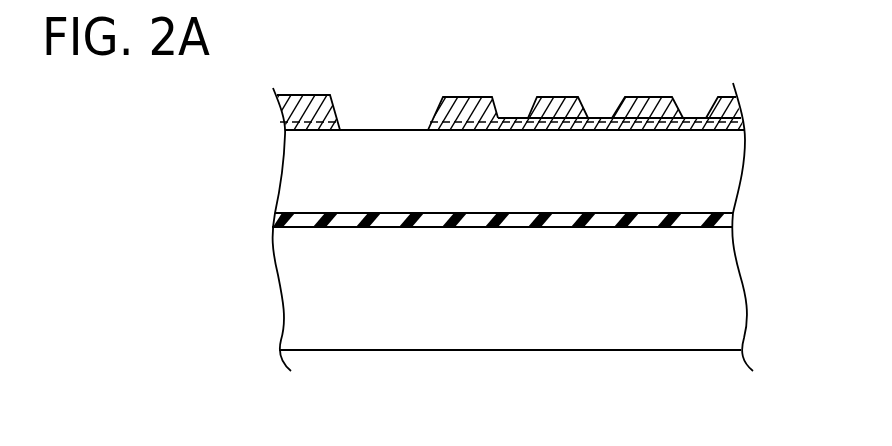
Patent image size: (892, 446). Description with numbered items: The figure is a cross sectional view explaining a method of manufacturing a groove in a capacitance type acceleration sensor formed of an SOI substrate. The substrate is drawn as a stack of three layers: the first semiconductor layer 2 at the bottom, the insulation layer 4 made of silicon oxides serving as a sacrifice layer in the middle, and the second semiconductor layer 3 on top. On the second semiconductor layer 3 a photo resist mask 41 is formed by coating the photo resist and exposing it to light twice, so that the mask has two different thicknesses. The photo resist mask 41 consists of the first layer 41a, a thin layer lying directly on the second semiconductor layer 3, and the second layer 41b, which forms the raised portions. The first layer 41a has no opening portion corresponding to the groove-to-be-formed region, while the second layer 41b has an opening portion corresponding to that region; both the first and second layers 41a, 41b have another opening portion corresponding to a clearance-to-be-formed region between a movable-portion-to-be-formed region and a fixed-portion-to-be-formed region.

The first semiconductor layer 2 is at (715, 287).
The second semiconductor layer 3 is at (715, 180).
The insulation layer 4 is at (710, 213).
The photo resist mask 41 is at (699, 64).
The first layer 41a is at (510, 117).
The second layer 41b is at (565, 97).